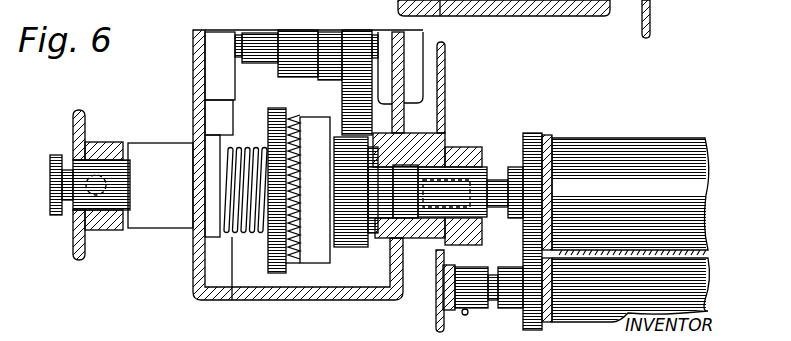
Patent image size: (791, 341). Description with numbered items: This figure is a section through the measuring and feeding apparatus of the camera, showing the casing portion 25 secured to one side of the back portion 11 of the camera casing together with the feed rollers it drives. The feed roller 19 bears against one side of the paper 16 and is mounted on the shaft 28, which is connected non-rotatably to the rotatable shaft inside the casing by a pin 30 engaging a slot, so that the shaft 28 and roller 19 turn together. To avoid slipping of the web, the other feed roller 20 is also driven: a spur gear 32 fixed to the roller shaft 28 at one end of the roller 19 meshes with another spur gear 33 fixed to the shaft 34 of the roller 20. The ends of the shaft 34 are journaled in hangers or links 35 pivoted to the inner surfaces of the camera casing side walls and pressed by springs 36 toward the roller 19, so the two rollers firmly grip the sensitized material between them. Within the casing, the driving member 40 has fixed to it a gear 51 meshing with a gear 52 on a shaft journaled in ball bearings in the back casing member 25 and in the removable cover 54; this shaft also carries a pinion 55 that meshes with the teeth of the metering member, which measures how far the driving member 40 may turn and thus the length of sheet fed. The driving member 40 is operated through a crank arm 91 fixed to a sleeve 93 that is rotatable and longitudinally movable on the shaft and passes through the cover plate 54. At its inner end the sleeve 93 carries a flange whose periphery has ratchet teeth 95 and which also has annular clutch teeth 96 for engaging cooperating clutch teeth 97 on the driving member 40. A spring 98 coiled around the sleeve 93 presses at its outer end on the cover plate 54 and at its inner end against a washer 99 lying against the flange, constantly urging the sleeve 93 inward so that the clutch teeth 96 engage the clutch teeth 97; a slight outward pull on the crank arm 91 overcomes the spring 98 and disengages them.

The camera casing back portion 11 is at (445, 98).
The paper 16 is at (708, 258).
The feed roller 19 is at (622, 117).
The other feed roller 20 is at (703, 287).
The casing portion 25 is at (375, 297).
The feed roller shaft 28 is at (498, 163).
The pin 30 is at (472, 157).
The spur gear 32 is at (537, 132).
The spur gear 33 is at (523, 318).
The shaft 34 is at (495, 275).
The hangers or links 35 is at (448, 312).
The springs 36 is at (468, 312).
The driving member 40 is at (310, 253).
The gear 51 is at (348, 242).
The gear 52 is at (353, 43).
The casing cover 54 is at (200, 293).
The pinion 55 is at (308, 18).
The crank arm 91 is at (108, 143).
The sleeve 93 is at (118, 207).
The ratchet teeth 95 is at (277, 108).
The clutch teeth 96 is at (295, 115).
The clutch teeth 97 is at (300, 117).
The spring 98 is at (247, 148).
The washer 99 is at (233, 246).